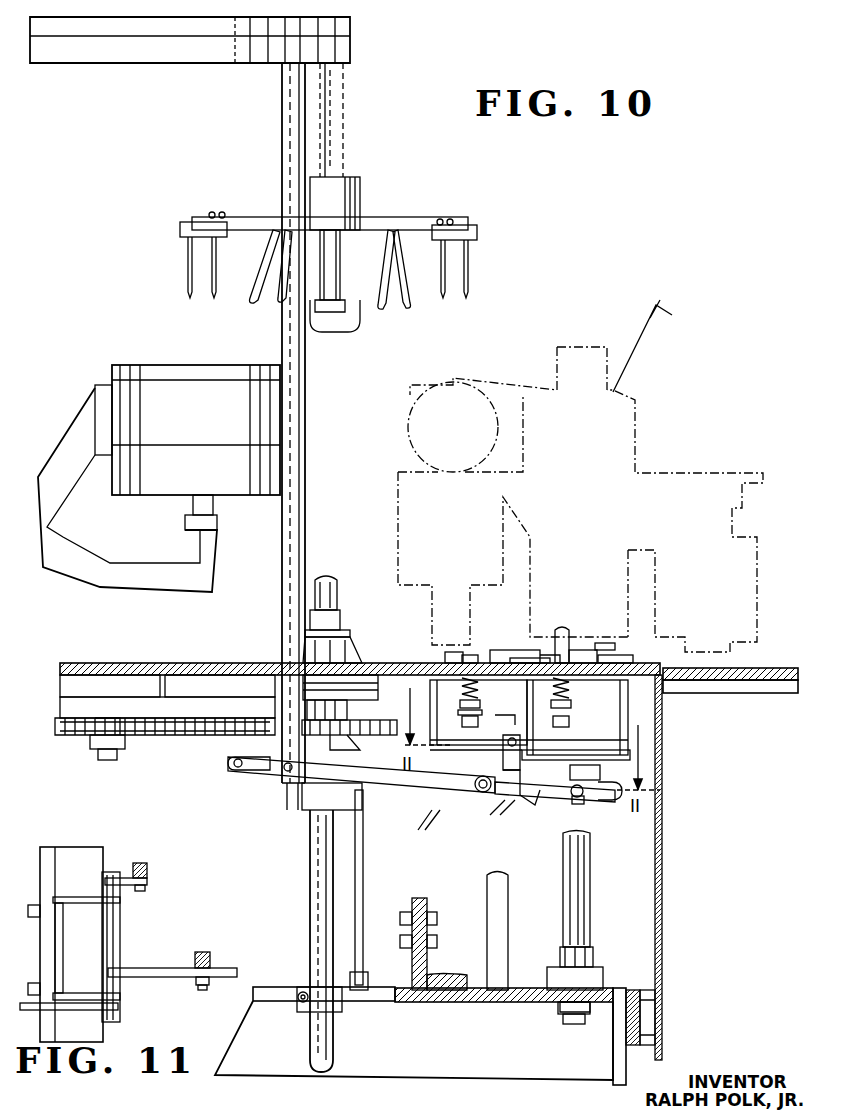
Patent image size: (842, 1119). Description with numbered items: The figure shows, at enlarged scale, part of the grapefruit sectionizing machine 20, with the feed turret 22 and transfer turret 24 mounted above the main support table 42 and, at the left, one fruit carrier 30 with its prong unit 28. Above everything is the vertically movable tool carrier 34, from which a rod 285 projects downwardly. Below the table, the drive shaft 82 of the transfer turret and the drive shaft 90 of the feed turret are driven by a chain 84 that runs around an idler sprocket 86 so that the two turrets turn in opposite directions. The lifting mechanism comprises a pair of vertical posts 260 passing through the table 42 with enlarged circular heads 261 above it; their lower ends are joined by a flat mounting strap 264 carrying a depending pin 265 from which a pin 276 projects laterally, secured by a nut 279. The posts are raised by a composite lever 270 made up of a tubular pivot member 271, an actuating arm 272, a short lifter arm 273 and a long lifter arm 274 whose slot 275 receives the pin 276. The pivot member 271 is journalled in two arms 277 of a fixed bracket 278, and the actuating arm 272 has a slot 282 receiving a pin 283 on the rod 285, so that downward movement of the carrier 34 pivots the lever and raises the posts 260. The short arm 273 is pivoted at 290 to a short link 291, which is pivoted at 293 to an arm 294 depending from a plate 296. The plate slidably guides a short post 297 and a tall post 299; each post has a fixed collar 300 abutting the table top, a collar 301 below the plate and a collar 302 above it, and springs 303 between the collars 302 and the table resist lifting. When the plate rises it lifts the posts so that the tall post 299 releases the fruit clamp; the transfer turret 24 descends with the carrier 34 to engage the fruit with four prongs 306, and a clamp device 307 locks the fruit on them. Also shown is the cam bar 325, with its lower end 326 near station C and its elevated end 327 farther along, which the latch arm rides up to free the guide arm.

In FIG. 10, the grapefruit sectionizing machine 20 is at (392, 108).
In FIG. 10, the feed turret 22 is at (715, 470).
In FIG. 10, the transfer turret 24 is at (395, 215).
In FIG. 10, the prong unit 28 is at (190, 507).
In FIG. 10, the fruit carrier 30 is at (185, 362).
In FIG. 10, the tool carrier 34 is at (212, 66).
In FIG. 10, the main support table 42 is at (100, 662).
In FIG. 10, the drive shaft 82 is at (322, 895).
In FIG. 10, the chain 84 is at (180, 738).
In FIG. 10, the idler sprocket 86 is at (95, 738).
In FIG. 10, the drive shaft 90 is at (575, 890).
In FIG. 10, the vertical posts 260 is at (618, 740).
In FIG. 10, the enlarged circular heads 261 is at (510, 660).
In FIG. 10, the mounting strap 264 is at (632, 752).
In FIG. 10, the pin 265 is at (605, 782).
In FIG. 11, the pin 265 is at (198, 952).
In FIG. 10, the composite lever 270 is at (398, 792).
In FIG. 10, the tubular pivot member 271 is at (474, 781).
In FIG. 11, the tubular pivot member 271 is at (122, 925).
In FIG. 10, the actuating arm 272 is at (345, 774).
In FIG. 11, the actuating arm 272 is at (40, 1008).
In FIG. 10, the short lifter arm 273 is at (520, 805).
In FIG. 11, the short lifter arm 273 is at (150, 884).
In FIG. 10, the long lifter arm 274 is at (550, 800).
In FIG. 11, the long lifter arm 274 is at (170, 972).
In FIG. 10, the slot 275 is at (600, 800).
In FIG. 10, the pin 276 is at (578, 797).
In FIG. 11, the pin 276 is at (202, 988).
In FIG. 10, the arms 277 is at (440, 810).
In FIG. 11, the arms 277 is at (85, 993).
In FIG. 10, the fixed bracket 278 is at (418, 900).
In FIG. 11, the fixed bracket 278 is at (45, 850).
In FIG. 11, the nut 279 is at (205, 985).
In FIG. 10, the slot 282 is at (250, 767).
In FIG. 10, the pin 283 is at (285, 770).
In FIG. 10, the rod 285 is at (306, 504).
In FIG. 10, the pivotal connection 290 is at (515, 795).
In FIG. 10, the short link 291 is at (505, 760).
In FIG. 11, the short link 291 is at (147, 882).
In FIG. 10, the pivot 293 is at (500, 755).
In FIG. 10, the arm 294 is at (510, 716).
In FIG. 11, the arm 294 is at (147, 866).
In FIG. 10, the plate 296 is at (458, 713).
In FIG. 10, the short post 297 is at (457, 660).
In FIG. 10, the tall post 299 is at (558, 630).
In FIG. 10, the fixed collar 300 is at (458, 663).
In FIG. 10, the collar 301 is at (462, 722).
In FIG. 10, the collar 302 is at (460, 703).
In FIG. 10, the springs 303 is at (460, 684).
In FIG. 10, the prongs 306 is at (215, 265).
In FIG. 10, the clamp device 307 is at (252, 290).
In FIG. 10, the cam bar 325 is at (575, 650).
In FIG. 10, the lower end 326 is at (455, 655).
In FIG. 10, the elevated end 327 is at (600, 650).